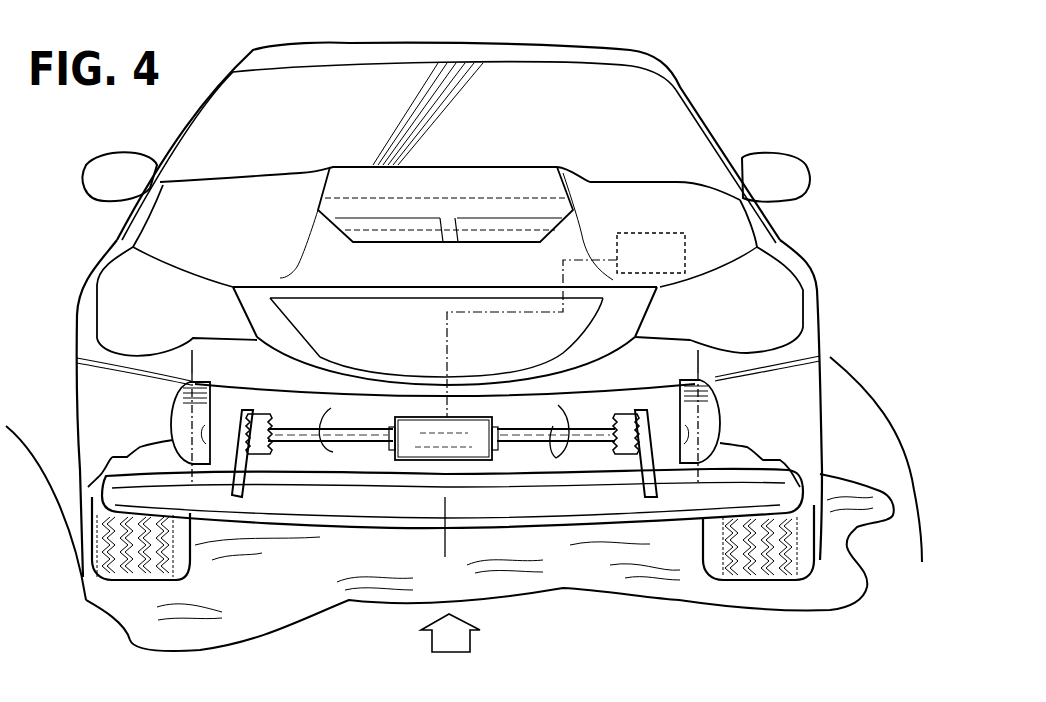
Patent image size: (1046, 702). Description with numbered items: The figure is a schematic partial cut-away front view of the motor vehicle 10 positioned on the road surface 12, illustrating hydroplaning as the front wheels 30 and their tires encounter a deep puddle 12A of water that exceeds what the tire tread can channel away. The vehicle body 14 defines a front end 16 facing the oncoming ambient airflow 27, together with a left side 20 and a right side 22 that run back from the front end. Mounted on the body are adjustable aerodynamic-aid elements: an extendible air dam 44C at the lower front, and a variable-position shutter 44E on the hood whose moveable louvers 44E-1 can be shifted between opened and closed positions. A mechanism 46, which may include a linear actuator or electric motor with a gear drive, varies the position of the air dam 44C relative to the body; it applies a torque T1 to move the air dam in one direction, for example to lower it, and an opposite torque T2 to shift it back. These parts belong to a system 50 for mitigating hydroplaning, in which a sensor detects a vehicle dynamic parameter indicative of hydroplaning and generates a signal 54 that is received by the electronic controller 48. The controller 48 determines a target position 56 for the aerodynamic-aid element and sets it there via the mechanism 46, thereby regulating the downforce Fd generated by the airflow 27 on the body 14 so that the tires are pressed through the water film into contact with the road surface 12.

The motor vehicle 10 is at (824, 157).
The road surface 12 is at (46, 426).
The deep puddle 12A is at (705, 598).
The vehicle body 14 is at (288, 97).
The front end 16 is at (143, 426).
The left side 20 is at (790, 243).
The right side 22 is at (104, 244).
The ambient airflow 27 is at (430, 642).
The front wheels 30 is at (130, 588).
The extendible air dam 44C is at (347, 534).
The variable-position shutter 44E is at (512, 208).
The moveable louvers 44E-1 is at (362, 226).
The mechanism 46 is at (509, 458).
The electronic controller 48 is at (648, 233).
The system for mitigation of hydroplaning 50 is at (697, 234).
The signal 54 is at (430, 462).
The target position 56 is at (620, 233).
The torque T1 is at (331, 408).
The opposite torque T2 is at (558, 405).
The downforce Fd is at (205, 371).